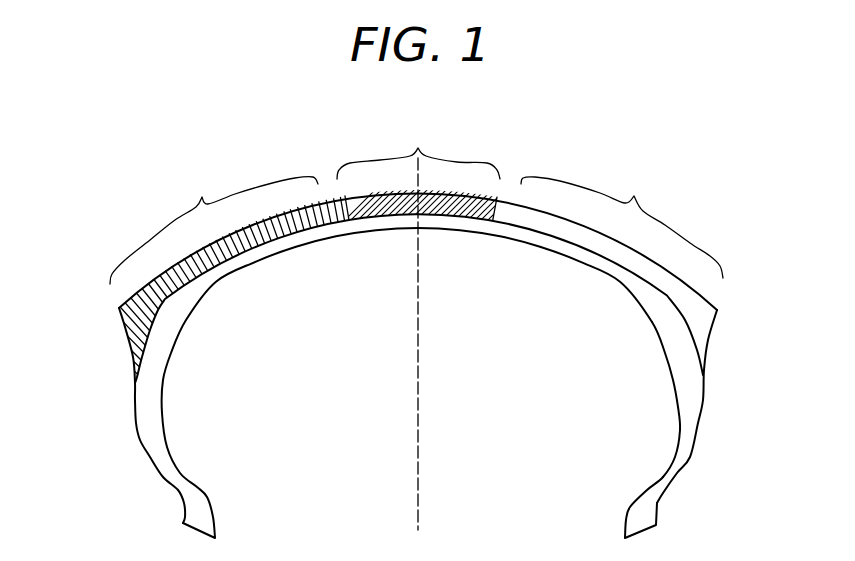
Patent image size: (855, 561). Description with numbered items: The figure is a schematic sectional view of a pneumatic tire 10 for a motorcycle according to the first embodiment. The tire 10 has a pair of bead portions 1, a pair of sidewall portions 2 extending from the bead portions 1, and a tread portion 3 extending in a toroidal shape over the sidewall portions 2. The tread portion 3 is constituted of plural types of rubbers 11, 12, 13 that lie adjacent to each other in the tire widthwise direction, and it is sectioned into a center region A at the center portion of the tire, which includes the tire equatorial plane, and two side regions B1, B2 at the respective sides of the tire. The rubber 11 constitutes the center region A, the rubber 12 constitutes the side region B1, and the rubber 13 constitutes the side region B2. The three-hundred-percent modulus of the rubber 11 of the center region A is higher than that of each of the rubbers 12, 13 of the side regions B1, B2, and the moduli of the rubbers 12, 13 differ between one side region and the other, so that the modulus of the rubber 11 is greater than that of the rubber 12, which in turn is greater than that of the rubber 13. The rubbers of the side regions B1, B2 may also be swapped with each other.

The bead portion 1 is at (660, 503).
The sidewall portion 2 is at (697, 427).
The tread portion 3 is at (687, 277).
The pneumatic tire 10 is at (118, 182).
The rubber of the center region 11 is at (463, 202).
The rubber of the side region B1 12 is at (155, 277).
The rubber of the side region B2 13 is at (647, 272).
The center region A is at (418, 149).
The side region B1 is at (214, 227).
The side region B2 is at (622, 225).